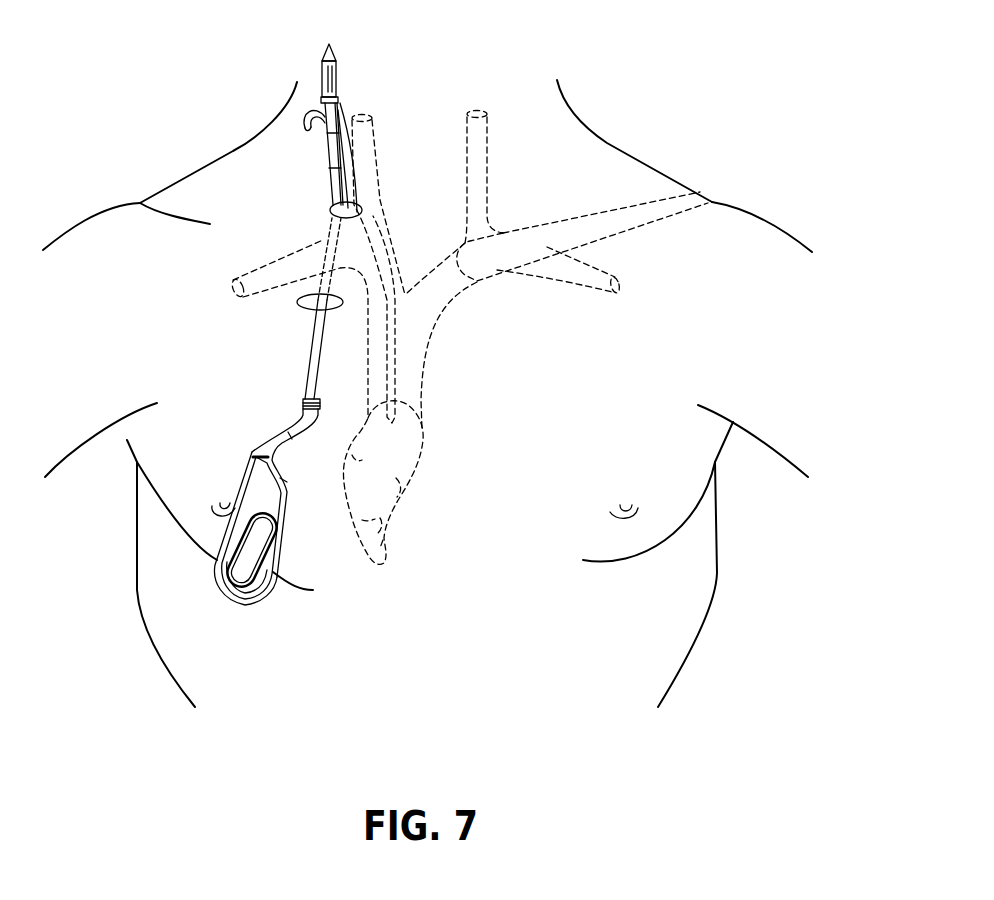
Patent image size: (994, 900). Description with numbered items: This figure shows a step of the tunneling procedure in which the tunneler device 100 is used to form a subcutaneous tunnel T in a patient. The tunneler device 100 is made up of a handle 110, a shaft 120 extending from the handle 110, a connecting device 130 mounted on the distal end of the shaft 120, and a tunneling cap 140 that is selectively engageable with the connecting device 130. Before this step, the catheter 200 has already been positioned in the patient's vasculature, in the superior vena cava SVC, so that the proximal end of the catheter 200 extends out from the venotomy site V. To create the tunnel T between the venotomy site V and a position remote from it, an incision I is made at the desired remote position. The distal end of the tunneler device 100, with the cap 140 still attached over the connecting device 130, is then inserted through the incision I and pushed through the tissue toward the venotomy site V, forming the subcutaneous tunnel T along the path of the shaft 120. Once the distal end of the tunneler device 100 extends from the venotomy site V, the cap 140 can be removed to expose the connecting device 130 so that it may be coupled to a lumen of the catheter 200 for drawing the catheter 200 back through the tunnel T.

The tunneler device 100 is at (273, 398).
The handle 110 is at (278, 575).
The shaft 120 is at (315, 348).
The connecting device 130 is at (326, 130).
The tunneling cap 140 is at (338, 66).
The catheter 200 is at (340, 112).
The venotomy site V is at (358, 207).
The subcutaneous tunnel T is at (325, 250).
The incision I is at (296, 302).
The superior vena cava SVC is at (408, 352).